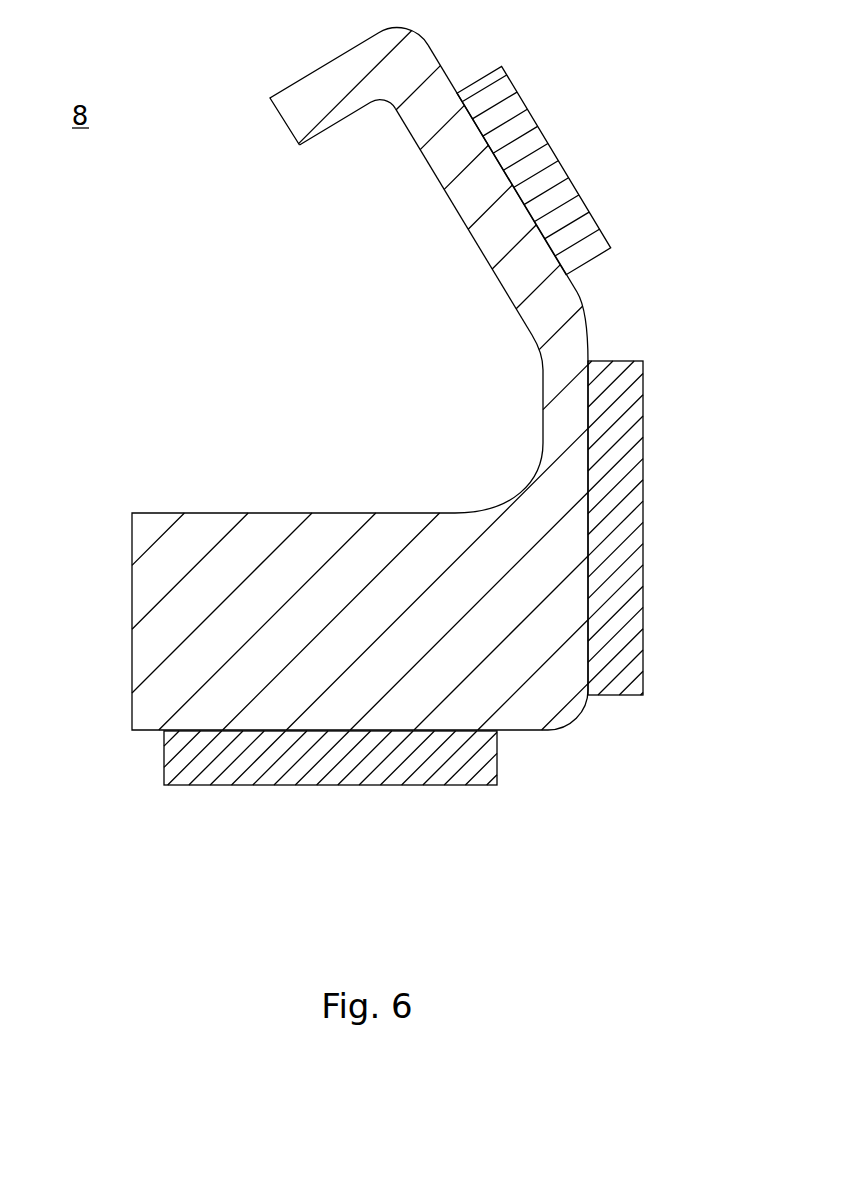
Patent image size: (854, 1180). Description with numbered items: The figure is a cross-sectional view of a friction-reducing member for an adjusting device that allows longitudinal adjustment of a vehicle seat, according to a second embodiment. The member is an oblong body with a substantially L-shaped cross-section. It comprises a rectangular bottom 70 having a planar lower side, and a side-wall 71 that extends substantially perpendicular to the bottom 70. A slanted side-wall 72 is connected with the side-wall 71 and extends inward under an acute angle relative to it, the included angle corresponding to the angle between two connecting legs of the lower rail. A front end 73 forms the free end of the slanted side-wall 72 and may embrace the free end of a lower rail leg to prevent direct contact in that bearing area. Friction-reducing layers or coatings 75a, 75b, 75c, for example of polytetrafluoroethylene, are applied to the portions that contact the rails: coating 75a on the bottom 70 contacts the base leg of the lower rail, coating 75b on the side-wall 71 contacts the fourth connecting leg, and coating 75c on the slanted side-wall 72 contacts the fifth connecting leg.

The bottom 70 is at (147, 603).
The side-wall 71 is at (553, 446).
The slanted side-wall 72 is at (468, 205).
The front end 73 is at (303, 113).
The friction-reducing layer or coating 75a is at (334, 773).
The friction-reducing layer or coating 75b is at (633, 534).
The friction-reducing layer or coating 75c is at (553, 162).